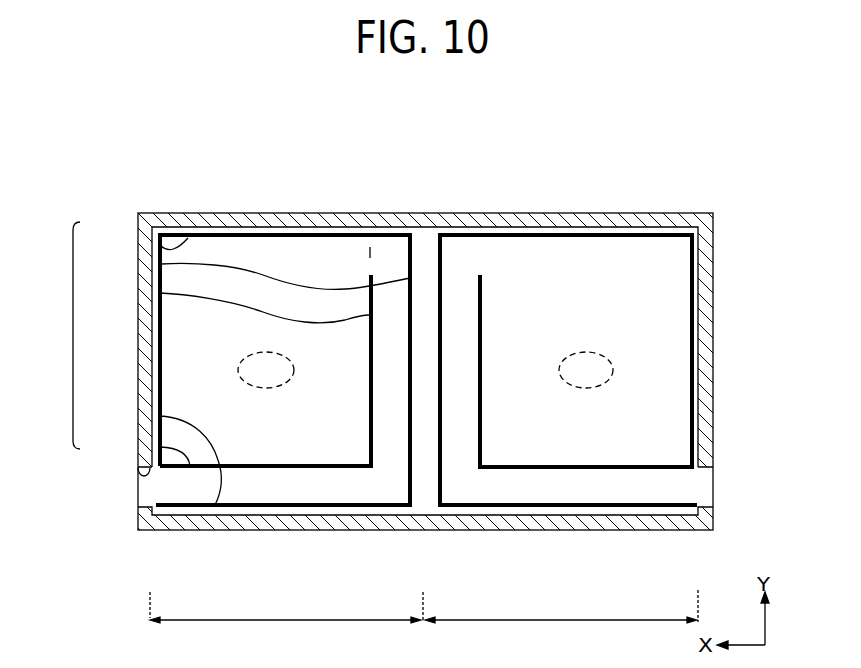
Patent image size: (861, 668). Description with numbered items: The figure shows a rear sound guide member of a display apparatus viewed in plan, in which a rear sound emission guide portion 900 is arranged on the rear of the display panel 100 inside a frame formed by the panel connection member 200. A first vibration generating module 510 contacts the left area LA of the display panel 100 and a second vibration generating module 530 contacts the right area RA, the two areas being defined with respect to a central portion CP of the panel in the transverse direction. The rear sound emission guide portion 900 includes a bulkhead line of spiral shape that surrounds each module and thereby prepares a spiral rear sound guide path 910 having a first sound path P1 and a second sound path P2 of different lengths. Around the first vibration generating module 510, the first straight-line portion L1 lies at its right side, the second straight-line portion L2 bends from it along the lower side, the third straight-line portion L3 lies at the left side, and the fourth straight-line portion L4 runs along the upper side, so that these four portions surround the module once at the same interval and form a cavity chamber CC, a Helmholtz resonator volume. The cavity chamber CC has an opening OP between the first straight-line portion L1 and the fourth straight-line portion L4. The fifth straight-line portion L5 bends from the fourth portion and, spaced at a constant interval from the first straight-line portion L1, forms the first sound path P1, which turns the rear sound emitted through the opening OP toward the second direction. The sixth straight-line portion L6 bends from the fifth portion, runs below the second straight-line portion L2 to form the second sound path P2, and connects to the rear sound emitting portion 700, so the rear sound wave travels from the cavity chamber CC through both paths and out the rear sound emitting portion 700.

The panel connection member 200 is at (146, 215).
The fourth straight-line portion L4 is at (150, 234).
The third straight-line portion L3 is at (159, 256).
The fifth straight-line portion L5 is at (161, 264).
The first straight-line portion L1 is at (161, 293).
The rear sound emission guide portion 900 is at (49, 335).
The sixth straight-line portion L6 is at (160, 416).
The second straight-line portion L2 is at (160, 447).
The rear sound emitting portion 700 is at (143, 475).
The display panel 100 is at (145, 493).
The first opening OP is at (370, 256).
The rear sound guide path 910 is at (426, 322).
The first sound path P1 is at (402, 378).
The second sound path P2 is at (305, 497).
The cavity chamber CC is at (280, 345).
The first vibration generating module 510 is at (267, 389).
The second vibration generating module 530 is at (587, 389).
The left area LA is at (285, 618).
The central portion CP is at (423, 621).
The right area RA is at (561, 617).